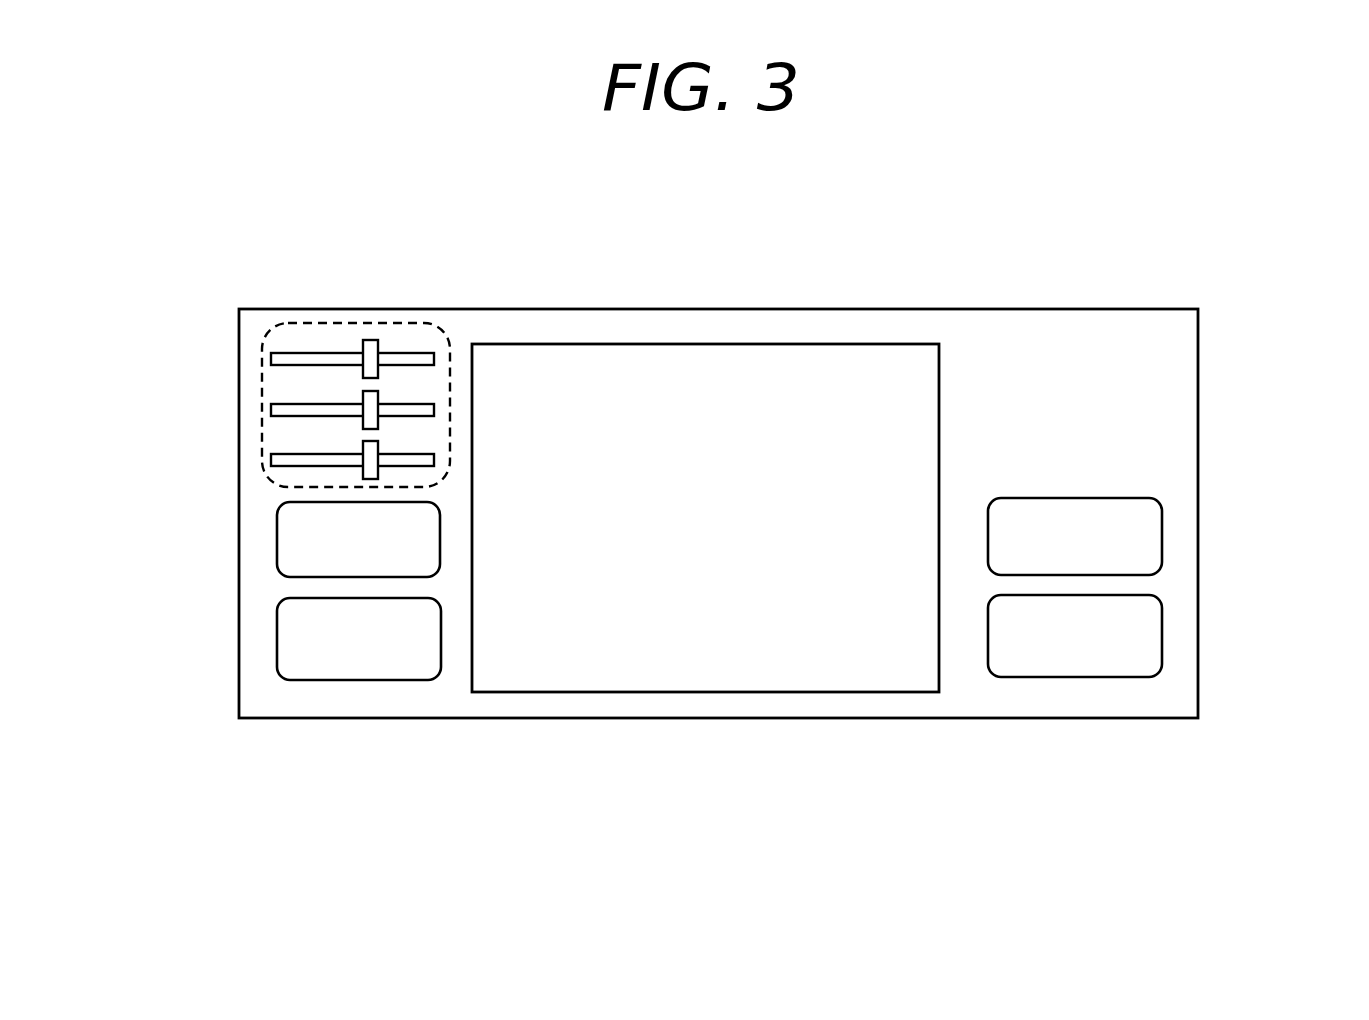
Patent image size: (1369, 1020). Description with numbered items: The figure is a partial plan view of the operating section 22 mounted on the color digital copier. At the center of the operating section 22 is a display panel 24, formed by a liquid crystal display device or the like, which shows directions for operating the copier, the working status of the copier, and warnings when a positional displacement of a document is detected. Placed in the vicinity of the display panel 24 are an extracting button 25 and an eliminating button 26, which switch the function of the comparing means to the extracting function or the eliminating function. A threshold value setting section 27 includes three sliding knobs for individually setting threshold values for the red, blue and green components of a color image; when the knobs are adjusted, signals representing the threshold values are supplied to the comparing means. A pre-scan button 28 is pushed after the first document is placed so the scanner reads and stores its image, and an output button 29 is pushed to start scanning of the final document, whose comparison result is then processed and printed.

The operating section 22 is at (740, 292).
The display panel 24 is at (670, 692).
The extracting button 25 is at (277, 543).
The eliminating button 26 is at (277, 643).
The threshold value setting section 27 is at (393, 325).
The pre-scan button 28 is at (1162, 535).
The output button 29 is at (1162, 635).